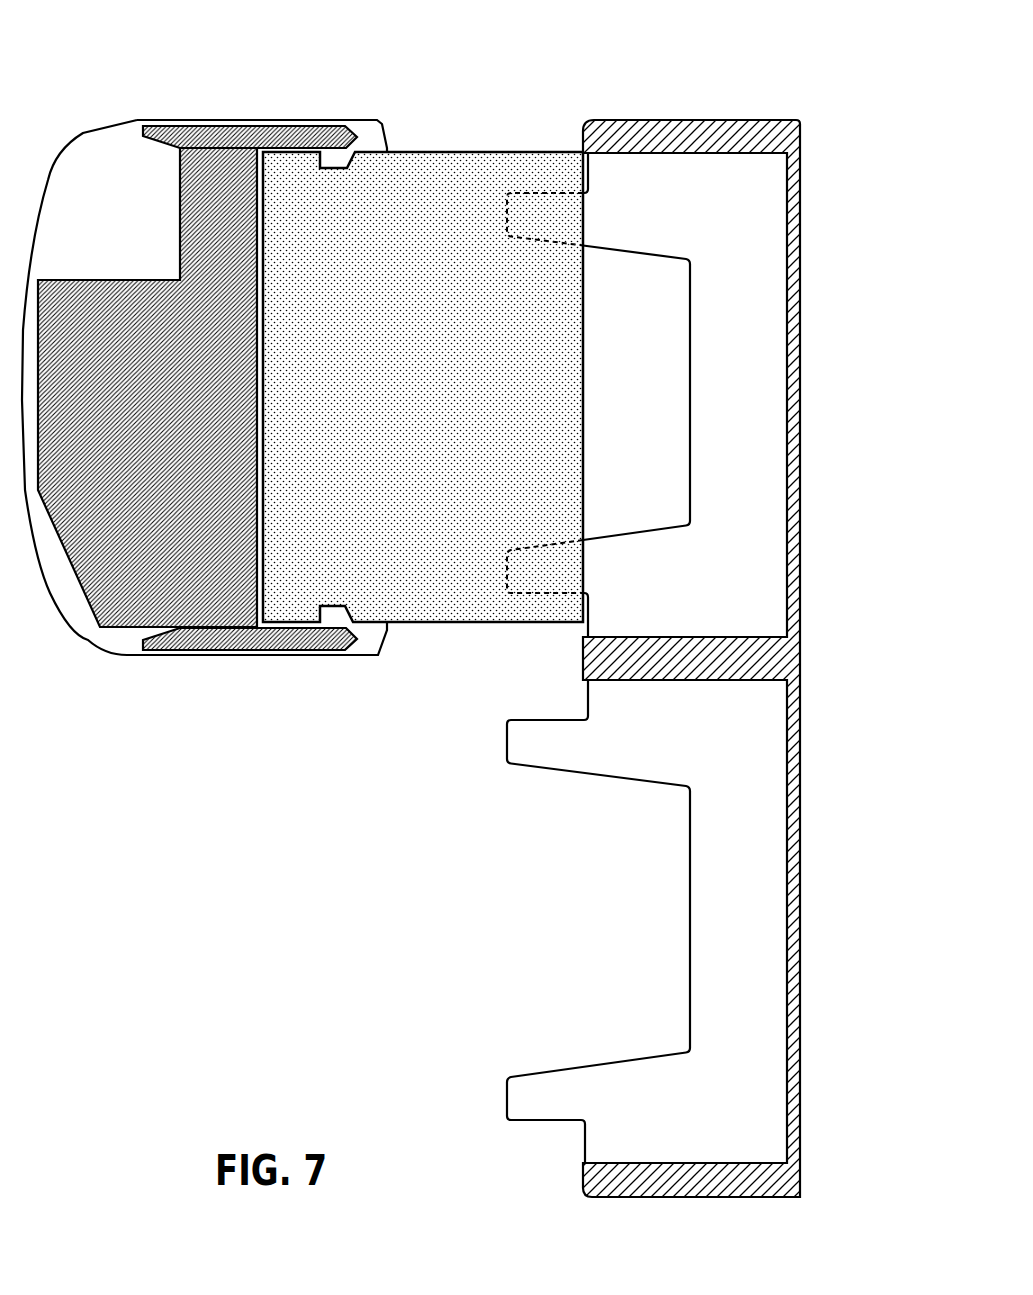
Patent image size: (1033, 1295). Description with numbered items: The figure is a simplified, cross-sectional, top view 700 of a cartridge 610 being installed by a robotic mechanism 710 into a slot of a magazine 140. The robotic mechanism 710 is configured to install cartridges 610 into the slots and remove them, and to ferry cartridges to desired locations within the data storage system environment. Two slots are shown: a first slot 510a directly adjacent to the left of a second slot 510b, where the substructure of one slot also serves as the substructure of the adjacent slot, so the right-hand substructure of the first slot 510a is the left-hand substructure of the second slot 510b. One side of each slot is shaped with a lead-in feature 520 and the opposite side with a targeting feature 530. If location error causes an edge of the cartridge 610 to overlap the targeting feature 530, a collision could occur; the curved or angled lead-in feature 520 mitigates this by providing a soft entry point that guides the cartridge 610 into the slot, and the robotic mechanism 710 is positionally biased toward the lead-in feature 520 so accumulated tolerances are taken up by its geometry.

The simplified, cross-sectional, top view 700 is at (214, 56).
The robotic mechanism 710 is at (197, 388).
The cartridge 610 is at (423, 387).
The magazine 140 is at (670, 128).
The first slot 510a is at (625, 386).
The second slot 510b is at (626, 921).
The lead-in feature 520 is at (580, 137).
The targeting feature 530 is at (583, 655).